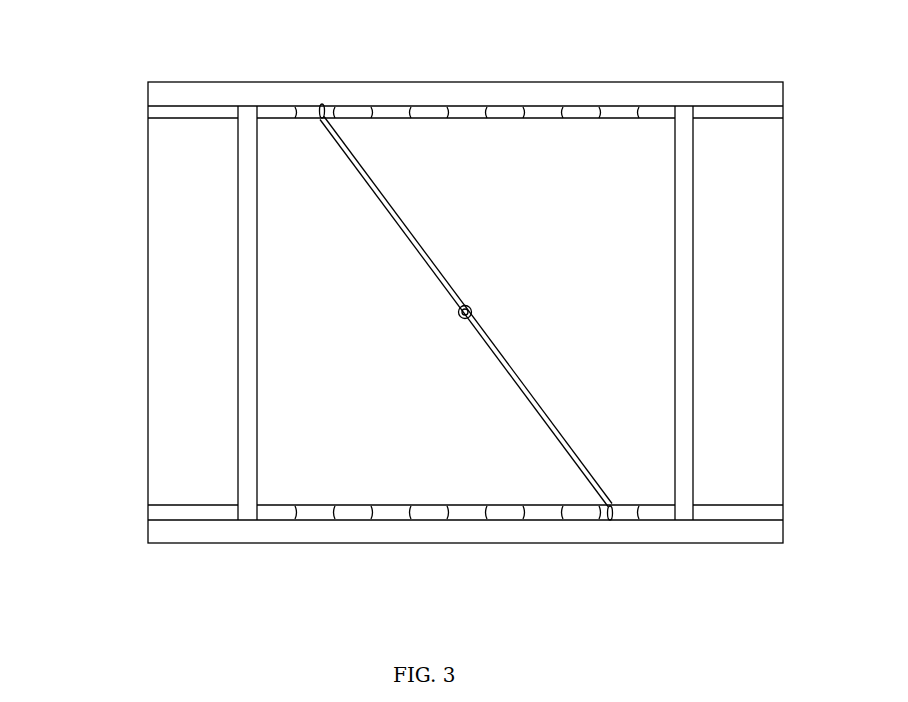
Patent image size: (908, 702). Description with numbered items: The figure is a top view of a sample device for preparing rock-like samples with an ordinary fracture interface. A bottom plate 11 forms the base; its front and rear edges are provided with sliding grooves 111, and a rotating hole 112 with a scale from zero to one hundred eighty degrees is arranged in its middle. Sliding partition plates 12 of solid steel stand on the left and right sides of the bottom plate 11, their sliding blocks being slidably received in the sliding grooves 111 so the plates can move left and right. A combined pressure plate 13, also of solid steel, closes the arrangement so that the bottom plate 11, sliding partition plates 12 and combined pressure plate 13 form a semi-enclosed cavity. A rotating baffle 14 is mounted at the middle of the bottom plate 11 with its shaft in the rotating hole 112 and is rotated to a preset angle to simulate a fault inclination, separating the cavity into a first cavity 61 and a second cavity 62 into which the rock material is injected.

The bottom plate 11 is at (750, 230).
The sliding groove 111 is at (722, 114).
The rotating hole 112 is at (460, 308).
The sliding partition plate 12 is at (243, 310).
The combined pressure plate 13 is at (497, 113).
The rotating baffle 14 is at (372, 185).
The first cavity 61 is at (612, 338).
The second cavity 62 is at (378, 432).